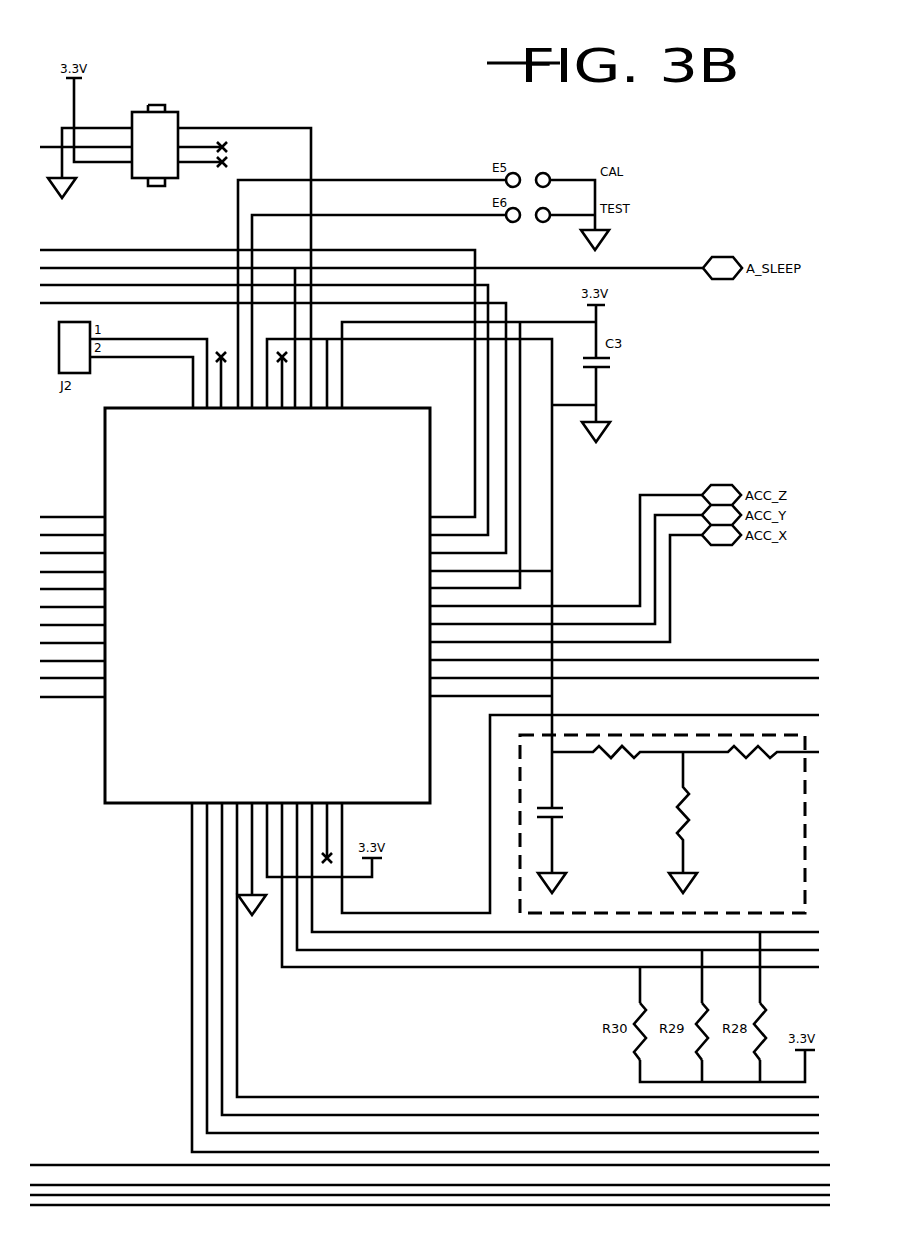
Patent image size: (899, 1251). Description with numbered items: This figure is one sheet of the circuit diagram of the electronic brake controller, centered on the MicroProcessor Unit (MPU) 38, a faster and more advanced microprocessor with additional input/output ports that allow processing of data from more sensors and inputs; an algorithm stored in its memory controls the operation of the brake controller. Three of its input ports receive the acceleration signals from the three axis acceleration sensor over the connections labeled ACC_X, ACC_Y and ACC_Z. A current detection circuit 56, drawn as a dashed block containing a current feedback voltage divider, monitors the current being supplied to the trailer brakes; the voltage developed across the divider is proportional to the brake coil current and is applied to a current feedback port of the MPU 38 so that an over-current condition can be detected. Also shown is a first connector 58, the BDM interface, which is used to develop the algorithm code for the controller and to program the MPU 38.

The first connector 58 is at (192, 105).
The MicroProcessor Unit (MPU) 38 is at (273, 621).
The current detection circuit 56 is at (769, 854).